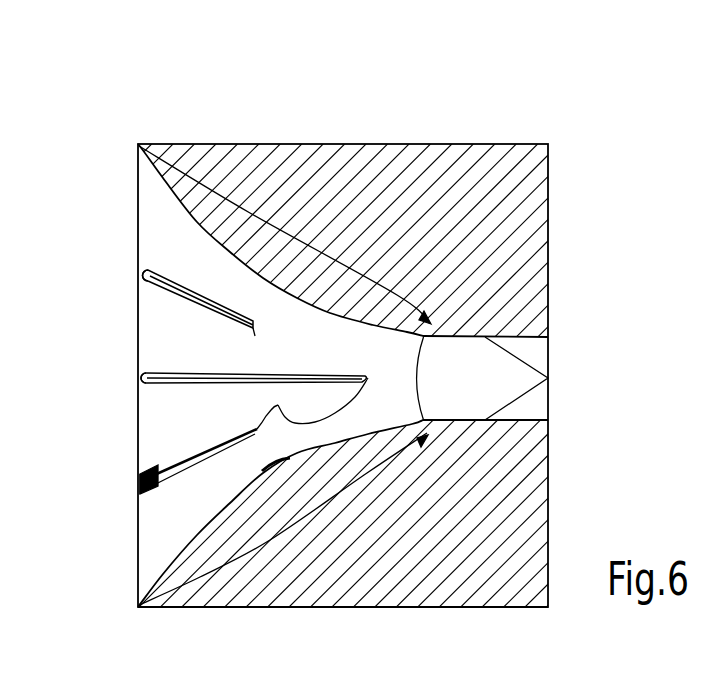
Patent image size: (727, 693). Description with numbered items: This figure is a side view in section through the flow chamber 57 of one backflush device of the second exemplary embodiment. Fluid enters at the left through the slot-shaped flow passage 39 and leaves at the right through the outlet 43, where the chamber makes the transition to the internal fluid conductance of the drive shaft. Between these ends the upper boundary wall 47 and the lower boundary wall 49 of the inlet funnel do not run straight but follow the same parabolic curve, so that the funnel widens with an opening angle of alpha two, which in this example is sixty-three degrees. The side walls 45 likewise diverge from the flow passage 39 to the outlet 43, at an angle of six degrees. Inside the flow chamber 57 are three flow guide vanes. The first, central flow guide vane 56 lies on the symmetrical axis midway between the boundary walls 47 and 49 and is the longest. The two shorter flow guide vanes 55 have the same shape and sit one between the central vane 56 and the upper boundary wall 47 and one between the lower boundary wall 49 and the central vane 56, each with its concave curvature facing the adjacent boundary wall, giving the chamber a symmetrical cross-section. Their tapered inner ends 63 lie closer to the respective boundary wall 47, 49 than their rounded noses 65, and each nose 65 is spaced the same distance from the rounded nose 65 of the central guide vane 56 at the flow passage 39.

The flow passage 39 is at (138, 220).
The outlet 43 is at (527, 340).
The side walls 45 is at (370, 692).
The upper boundary wall 47 is at (257, 285).
The lower boundary wall 49 is at (264, 474).
The flow guide vanes 55 is at (167, 290).
The central flow guide vane 56 is at (172, 390).
The flow chamber 57 is at (292, 332).
The tapered inner ends 63 is at (255, 336).
The rounded noses 65 is at (145, 277).